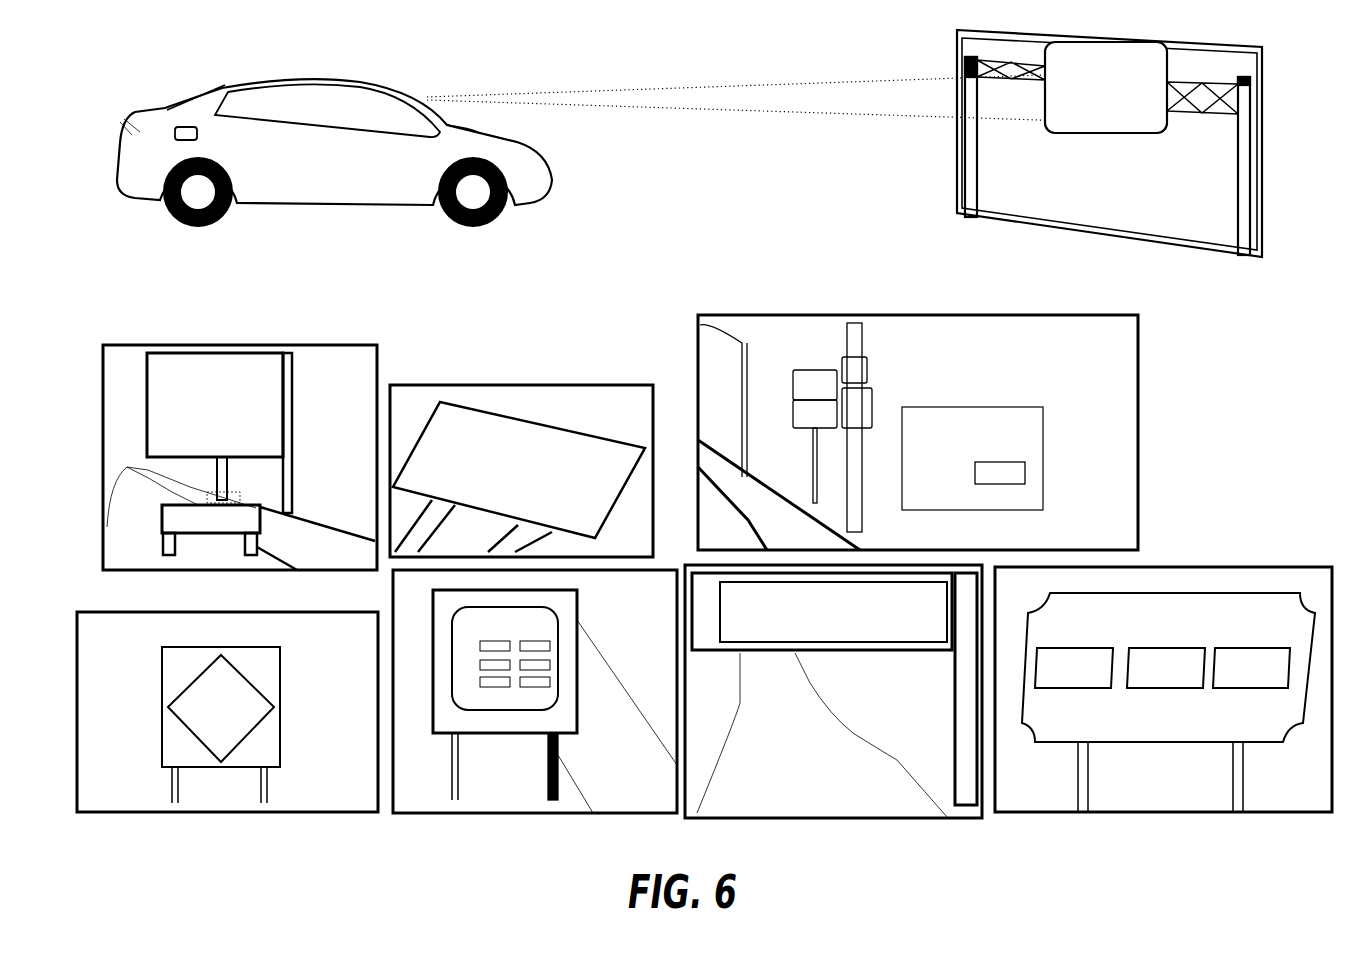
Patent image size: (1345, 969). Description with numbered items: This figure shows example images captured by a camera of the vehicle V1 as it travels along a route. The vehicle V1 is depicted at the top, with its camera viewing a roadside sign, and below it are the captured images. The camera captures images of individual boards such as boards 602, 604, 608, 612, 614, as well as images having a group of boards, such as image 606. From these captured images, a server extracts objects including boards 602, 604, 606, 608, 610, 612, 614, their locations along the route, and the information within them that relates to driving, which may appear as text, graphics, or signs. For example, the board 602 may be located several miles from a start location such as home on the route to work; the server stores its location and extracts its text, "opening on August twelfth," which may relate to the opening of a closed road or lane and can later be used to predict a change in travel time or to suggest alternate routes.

The vehicle V1 is at (334, 182).
The board 602 is at (351, 388).
The board 604 is at (628, 424).
The image having a group of boards 606 is at (1112, 354).
The board 608 is at (361, 647).
The board 610 is at (654, 609).
The board 612 is at (912, 695).
The board 614 is at (1175, 797).